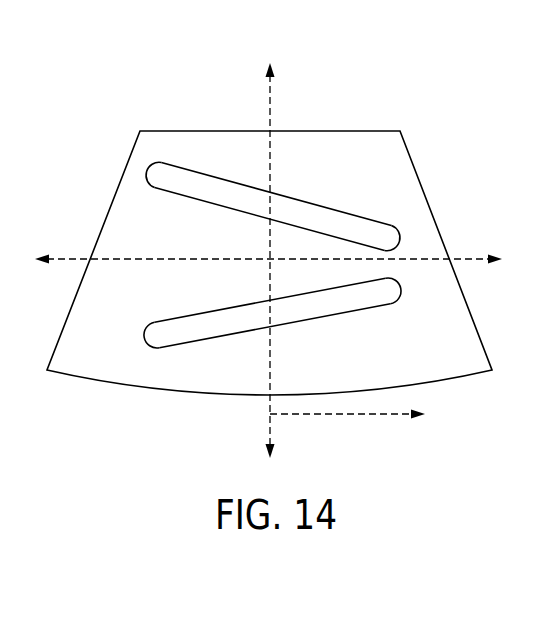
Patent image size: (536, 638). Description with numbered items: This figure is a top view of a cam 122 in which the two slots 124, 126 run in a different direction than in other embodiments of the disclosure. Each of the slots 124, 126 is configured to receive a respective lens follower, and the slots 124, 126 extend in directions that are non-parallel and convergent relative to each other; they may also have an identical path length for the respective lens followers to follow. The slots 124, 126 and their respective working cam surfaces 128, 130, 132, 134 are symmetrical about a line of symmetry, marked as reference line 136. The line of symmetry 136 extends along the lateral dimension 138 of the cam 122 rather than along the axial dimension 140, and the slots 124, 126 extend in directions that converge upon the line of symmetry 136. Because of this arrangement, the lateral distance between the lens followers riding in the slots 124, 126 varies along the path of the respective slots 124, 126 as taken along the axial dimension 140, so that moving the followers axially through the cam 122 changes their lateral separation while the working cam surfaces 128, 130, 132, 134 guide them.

The cam 122 is at (441, 124).
The slot 124 is at (273, 187).
The slot 126 is at (286, 357).
The working cam surface 128 is at (335, 213).
The working cam surface 130 is at (372, 243).
The working cam surface 132 is at (387, 300).
The working cam surface 134 is at (348, 310).
The line of symmetry 136 is at (465, 252).
The lateral dimension 138 is at (378, 417).
The axial dimension 140 is at (272, 95).